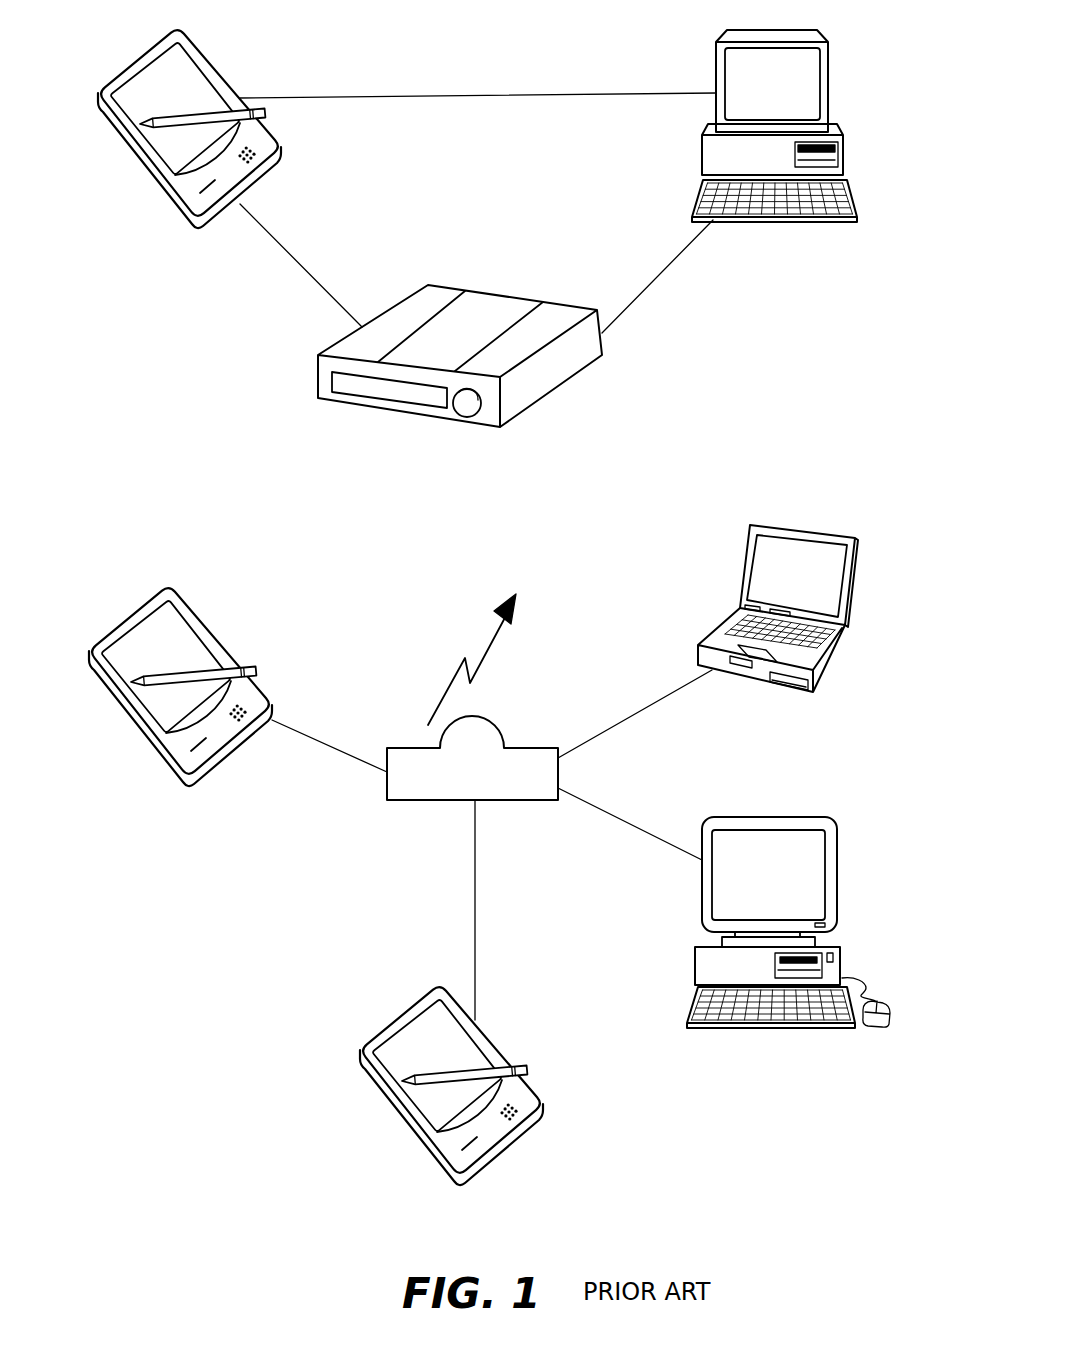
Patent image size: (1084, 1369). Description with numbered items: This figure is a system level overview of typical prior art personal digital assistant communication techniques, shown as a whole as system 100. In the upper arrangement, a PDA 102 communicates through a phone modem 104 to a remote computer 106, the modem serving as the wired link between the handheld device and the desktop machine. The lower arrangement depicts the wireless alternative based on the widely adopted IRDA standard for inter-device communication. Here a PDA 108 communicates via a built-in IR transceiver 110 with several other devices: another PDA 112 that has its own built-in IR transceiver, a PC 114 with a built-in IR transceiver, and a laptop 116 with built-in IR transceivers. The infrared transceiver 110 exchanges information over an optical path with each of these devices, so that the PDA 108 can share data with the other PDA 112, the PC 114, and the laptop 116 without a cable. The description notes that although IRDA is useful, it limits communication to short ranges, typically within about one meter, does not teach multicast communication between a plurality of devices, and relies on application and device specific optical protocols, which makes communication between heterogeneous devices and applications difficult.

The prior art network system 100 is at (392, 1255).
The PDA 102 is at (178, 219).
The phone modem 104 is at (418, 421).
The remote computer 106 is at (770, 222).
The PDA 108 is at (162, 762).
The built-in IR transceiver 110 is at (432, 800).
The PDA 112 is at (500, 1152).
The PC 114 is at (790, 1027).
The laptop 116 is at (793, 695).